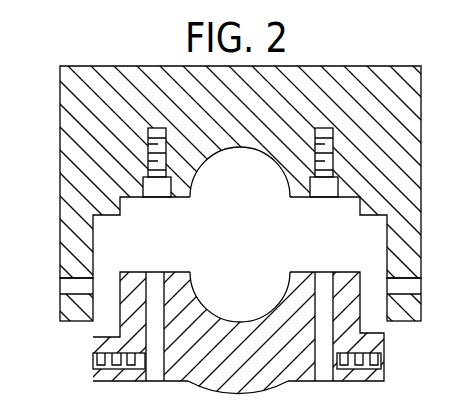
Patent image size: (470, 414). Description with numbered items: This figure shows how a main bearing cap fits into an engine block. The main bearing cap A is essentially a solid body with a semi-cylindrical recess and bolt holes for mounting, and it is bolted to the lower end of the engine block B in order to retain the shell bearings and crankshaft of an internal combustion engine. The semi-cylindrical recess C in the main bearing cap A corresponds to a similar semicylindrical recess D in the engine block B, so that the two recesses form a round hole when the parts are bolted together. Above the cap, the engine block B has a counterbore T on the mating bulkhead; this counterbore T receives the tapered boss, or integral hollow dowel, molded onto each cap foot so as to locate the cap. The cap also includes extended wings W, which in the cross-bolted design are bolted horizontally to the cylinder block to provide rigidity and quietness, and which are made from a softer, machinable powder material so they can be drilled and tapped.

The main bearing cap A is at (249, 379).
The engine block B is at (225, 112).
The semi-cylindrical recess C is at (246, 317).
The semicylindrical recess D is at (250, 147).
The counterbore T is at (143, 190).
The extended wings W is at (120, 337).